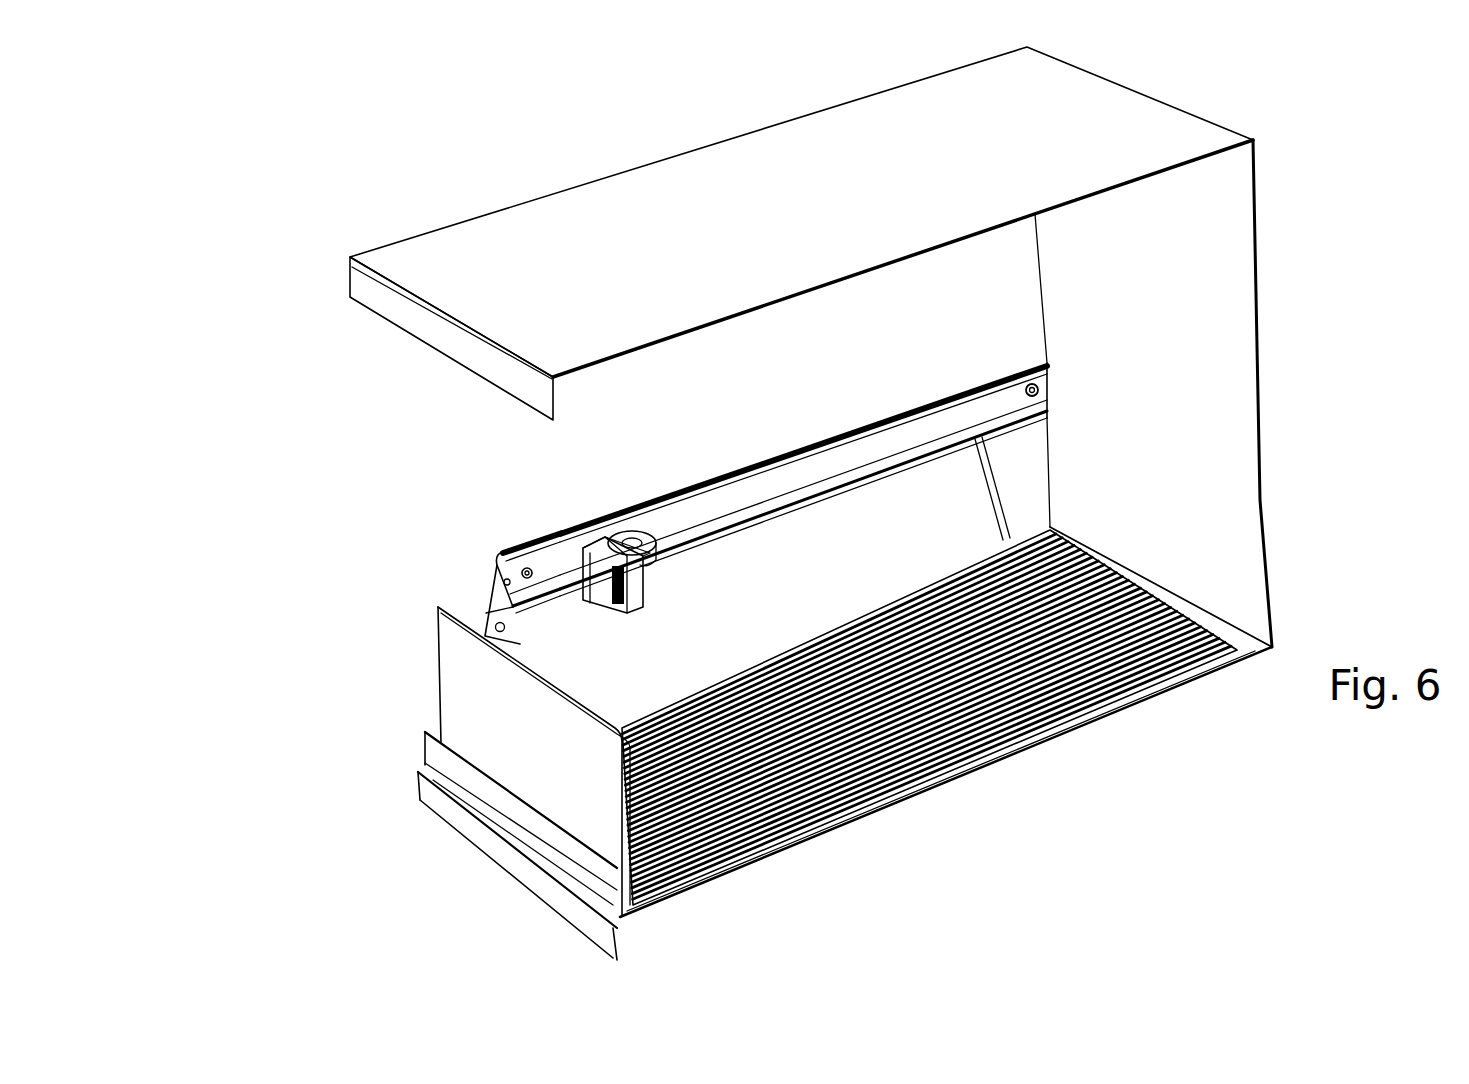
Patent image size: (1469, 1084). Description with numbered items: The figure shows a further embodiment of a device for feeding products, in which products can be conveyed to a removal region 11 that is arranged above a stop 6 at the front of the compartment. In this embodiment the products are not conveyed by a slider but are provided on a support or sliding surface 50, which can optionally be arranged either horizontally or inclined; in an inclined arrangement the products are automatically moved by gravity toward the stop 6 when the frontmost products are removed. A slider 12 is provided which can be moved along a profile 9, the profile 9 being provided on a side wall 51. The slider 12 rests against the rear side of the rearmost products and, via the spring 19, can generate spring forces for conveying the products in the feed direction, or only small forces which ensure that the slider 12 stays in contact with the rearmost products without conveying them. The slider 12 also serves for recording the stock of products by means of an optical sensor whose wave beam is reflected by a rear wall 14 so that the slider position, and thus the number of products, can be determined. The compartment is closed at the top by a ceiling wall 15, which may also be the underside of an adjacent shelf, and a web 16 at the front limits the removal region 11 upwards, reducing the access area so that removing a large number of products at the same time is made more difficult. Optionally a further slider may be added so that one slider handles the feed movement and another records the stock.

The stop 6 is at (460, 663).
The profile 9 is at (795, 480).
The removal region 11 is at (372, 415).
The slider 12 is at (598, 570).
The rear wall 14 is at (1162, 357).
The ceiling wall 15 is at (517, 263).
The web 16 is at (373, 288).
The spring 19 is at (650, 560).
The sliding surface 50 is at (972, 768).
The side wall 51 is at (548, 637).